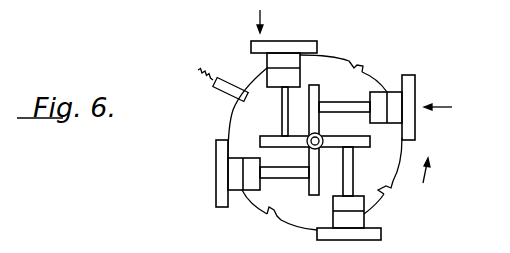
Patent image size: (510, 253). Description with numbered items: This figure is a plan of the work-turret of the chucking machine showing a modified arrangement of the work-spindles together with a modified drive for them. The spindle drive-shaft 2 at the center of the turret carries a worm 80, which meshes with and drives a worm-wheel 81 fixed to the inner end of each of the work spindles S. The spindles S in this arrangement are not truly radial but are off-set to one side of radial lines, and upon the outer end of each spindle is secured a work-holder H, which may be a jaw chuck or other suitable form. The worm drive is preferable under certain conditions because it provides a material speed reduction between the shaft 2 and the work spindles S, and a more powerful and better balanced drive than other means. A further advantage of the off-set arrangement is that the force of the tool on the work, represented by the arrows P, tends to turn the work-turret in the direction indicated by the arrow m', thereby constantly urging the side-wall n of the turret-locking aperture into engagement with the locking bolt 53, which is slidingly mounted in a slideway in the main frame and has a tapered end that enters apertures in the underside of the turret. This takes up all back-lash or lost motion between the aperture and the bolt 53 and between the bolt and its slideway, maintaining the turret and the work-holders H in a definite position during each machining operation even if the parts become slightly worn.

The spindle drive-shaft 2 is at (323, 147).
The side-wall of turret-locking aperture n is at (334, 149).
The worm-wheel 81 is at (308, 154).
The worm 80 is at (321, 137).
The work spindle S is at (282, 113).
The work-holder H is at (317, 48).
The arrow representing force of tool on work P is at (361, 56).
The arrow indicating direction of turret turning m' is at (441, 172).
The bolt 53 is at (224, 98).